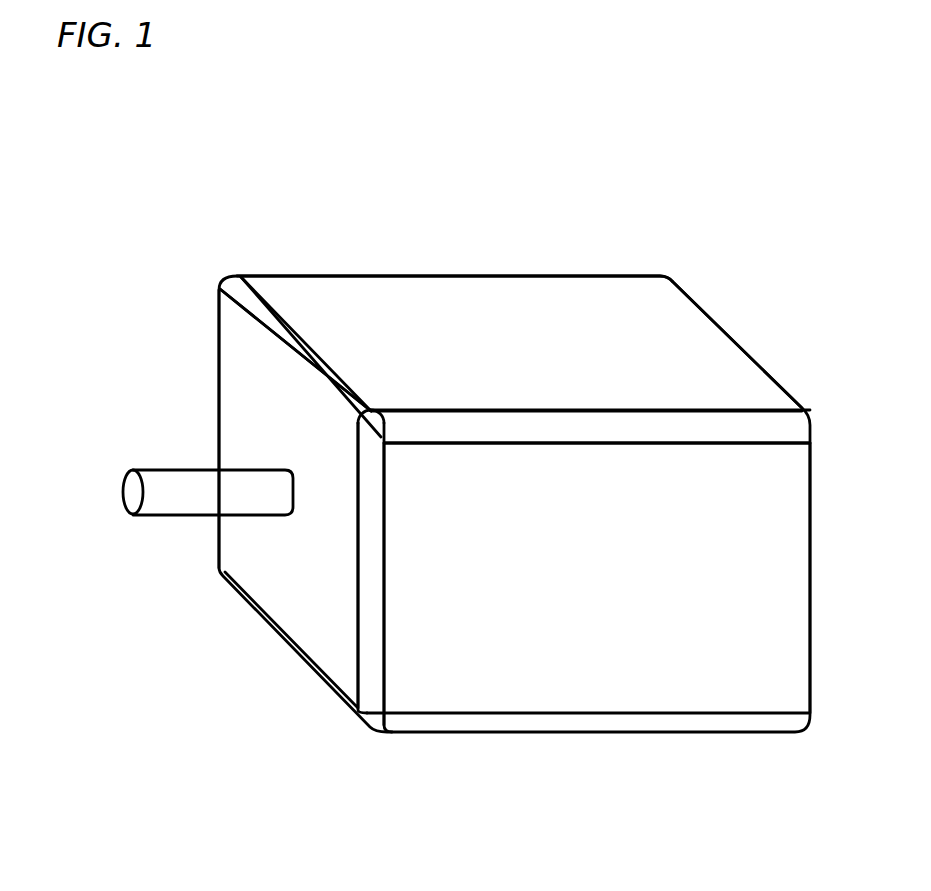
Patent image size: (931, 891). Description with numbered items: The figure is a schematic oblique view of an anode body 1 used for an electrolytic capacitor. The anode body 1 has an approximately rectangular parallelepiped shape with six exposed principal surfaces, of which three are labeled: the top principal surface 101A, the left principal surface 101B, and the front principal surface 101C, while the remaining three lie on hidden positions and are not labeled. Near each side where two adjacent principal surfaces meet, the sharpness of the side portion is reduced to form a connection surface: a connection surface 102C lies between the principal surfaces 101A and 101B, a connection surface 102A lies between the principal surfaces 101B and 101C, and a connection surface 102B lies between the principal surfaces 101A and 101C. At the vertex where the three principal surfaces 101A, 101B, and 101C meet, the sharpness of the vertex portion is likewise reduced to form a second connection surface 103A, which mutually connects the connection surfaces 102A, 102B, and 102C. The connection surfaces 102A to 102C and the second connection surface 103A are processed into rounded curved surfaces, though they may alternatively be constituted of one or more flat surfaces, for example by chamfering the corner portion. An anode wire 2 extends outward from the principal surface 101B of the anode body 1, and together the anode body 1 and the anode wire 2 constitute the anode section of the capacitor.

The anode body 1 is at (675, 333).
The anode wire 2 is at (167, 493).
The principal surface 101A is at (453, 325).
The principal surface 101B is at (253, 412).
The principal surface 101C is at (620, 627).
The connection surface 102A is at (372, 592).
The connection surface 102B is at (565, 423).
The connection surface 102C is at (272, 330).
The second connection surface 103A is at (372, 423).